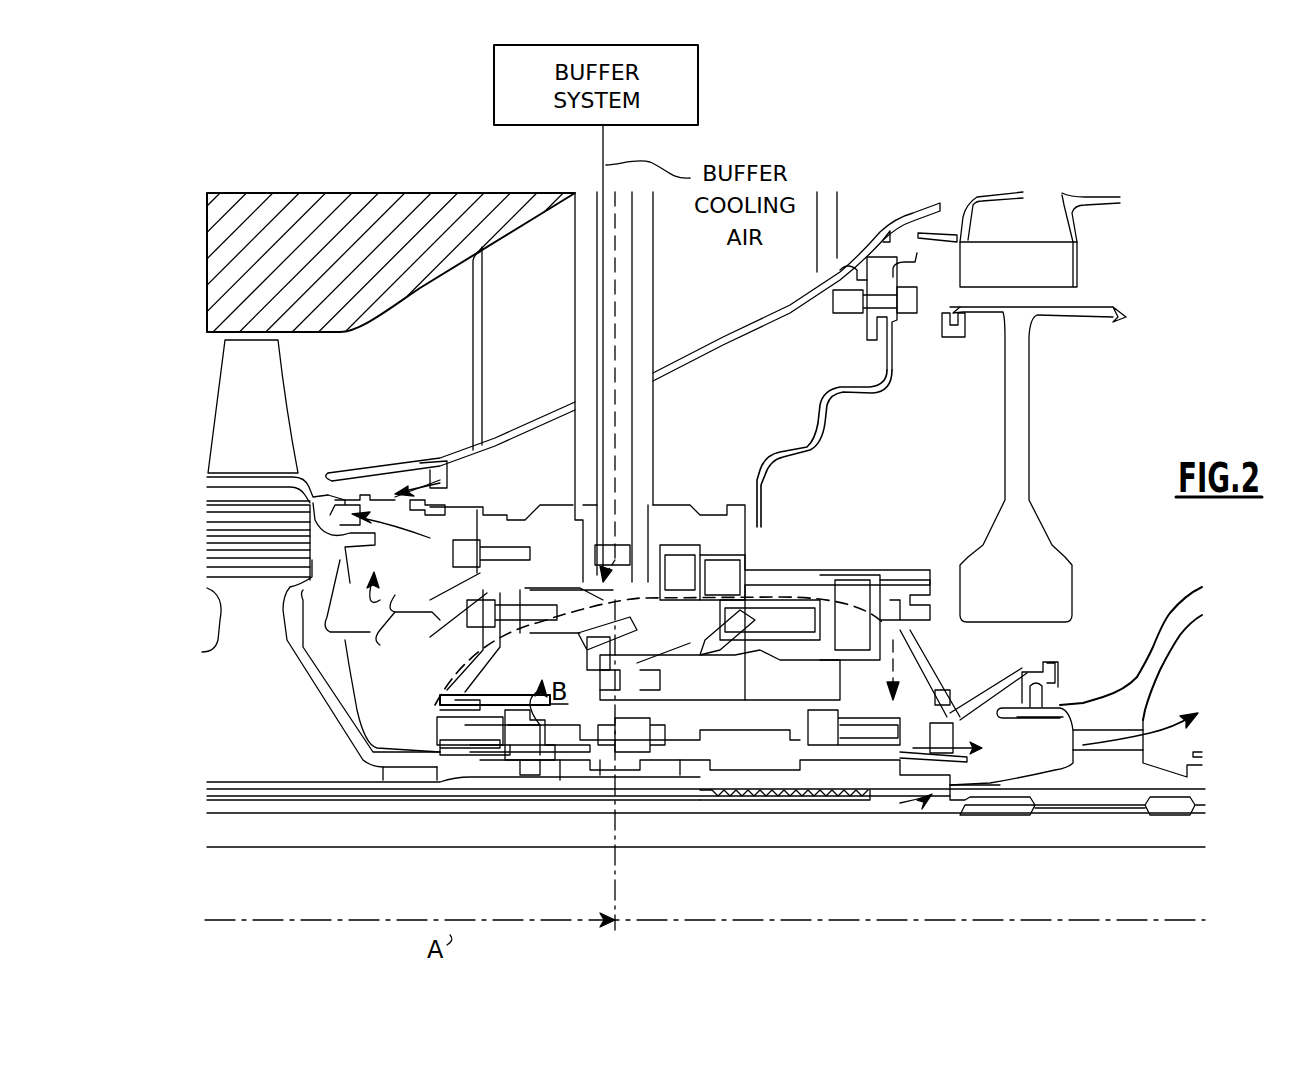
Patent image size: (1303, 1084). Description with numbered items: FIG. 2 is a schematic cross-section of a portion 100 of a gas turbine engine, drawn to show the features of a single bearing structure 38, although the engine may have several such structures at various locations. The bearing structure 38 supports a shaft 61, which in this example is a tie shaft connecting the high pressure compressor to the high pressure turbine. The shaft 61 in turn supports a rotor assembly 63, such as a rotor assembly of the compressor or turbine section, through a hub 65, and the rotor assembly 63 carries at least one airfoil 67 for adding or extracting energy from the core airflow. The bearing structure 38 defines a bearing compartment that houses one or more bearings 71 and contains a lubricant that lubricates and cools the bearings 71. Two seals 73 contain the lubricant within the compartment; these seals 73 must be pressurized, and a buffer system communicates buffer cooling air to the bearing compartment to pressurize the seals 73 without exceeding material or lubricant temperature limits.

The portion of a gas turbine engine 100 is at (870, 118).
The bearing structure 38 is at (768, 663).
The shaft 61 is at (695, 798).
The rotor assembly 63 is at (226, 659).
The hub 65 is at (480, 776).
The airfoil 67 is at (268, 410).
The bearing 71 is at (630, 736).
The seal 73 is at (522, 732).